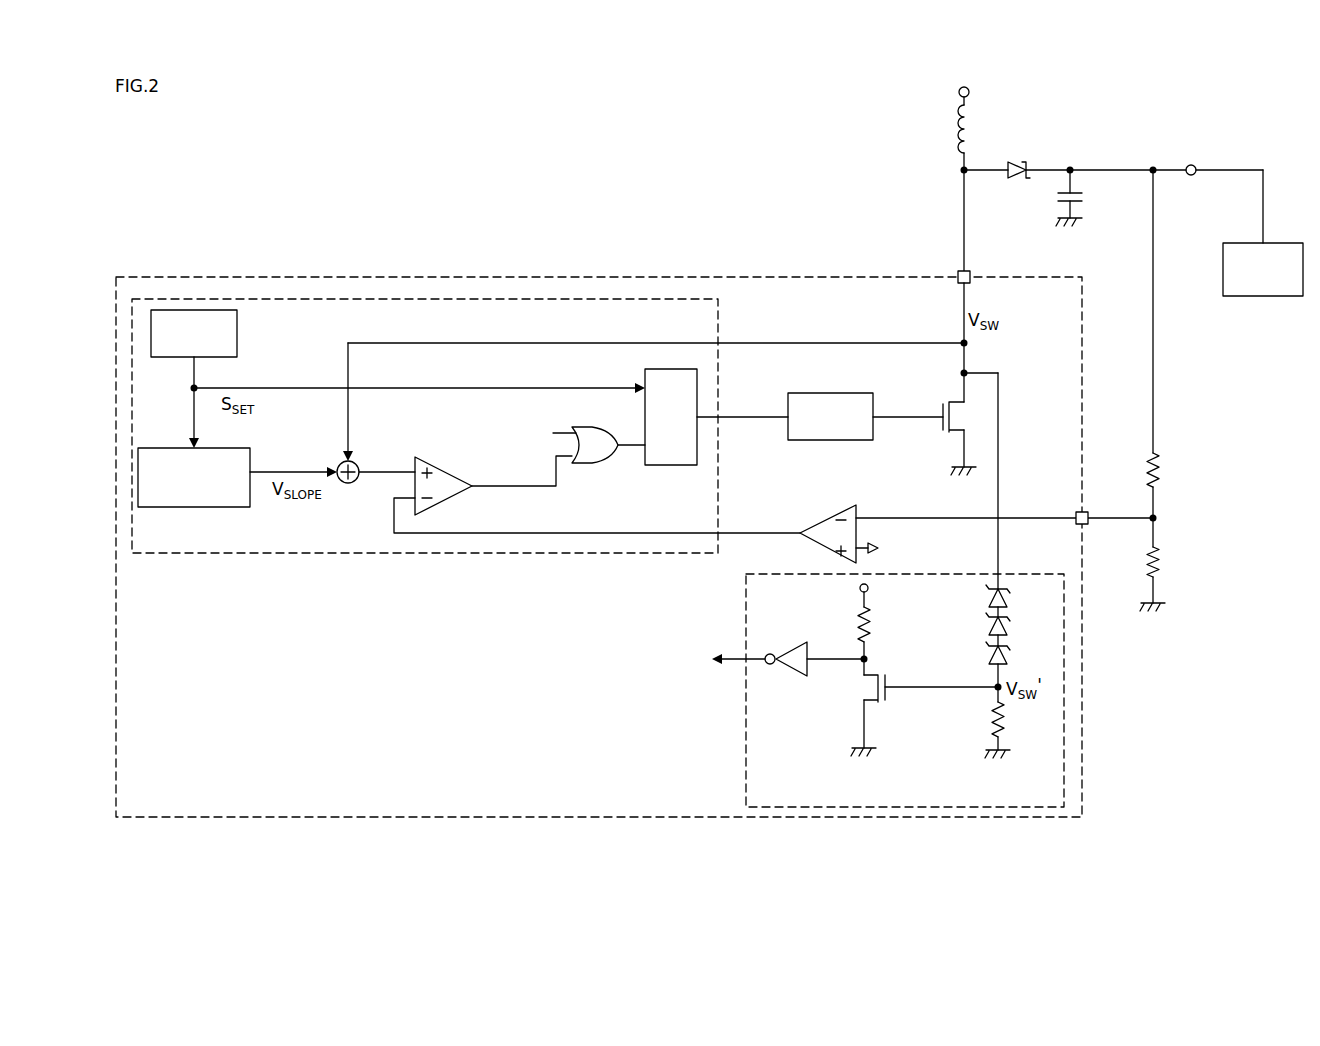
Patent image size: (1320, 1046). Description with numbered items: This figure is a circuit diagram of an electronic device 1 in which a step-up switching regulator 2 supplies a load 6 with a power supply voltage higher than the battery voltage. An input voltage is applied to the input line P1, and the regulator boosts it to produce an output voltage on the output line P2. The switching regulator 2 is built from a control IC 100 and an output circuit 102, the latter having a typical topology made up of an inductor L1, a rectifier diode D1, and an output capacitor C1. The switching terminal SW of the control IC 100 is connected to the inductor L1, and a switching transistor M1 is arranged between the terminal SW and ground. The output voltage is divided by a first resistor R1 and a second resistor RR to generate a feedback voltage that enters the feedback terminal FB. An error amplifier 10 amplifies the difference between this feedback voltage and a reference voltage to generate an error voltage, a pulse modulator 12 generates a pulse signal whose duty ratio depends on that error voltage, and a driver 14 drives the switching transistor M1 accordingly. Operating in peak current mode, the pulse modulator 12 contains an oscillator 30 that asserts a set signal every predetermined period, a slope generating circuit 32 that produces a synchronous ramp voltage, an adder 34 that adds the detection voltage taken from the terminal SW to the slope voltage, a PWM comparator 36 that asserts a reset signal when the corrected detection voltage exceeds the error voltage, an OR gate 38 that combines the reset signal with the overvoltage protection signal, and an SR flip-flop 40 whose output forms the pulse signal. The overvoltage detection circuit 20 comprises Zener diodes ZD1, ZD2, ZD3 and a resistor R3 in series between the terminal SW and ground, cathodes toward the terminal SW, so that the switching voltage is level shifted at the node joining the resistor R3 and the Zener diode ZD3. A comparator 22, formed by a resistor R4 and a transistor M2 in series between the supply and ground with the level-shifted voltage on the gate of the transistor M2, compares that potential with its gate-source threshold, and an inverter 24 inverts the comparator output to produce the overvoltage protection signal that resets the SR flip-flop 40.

The electronic device 1 is at (702, 851).
The switching regulator 2 is at (1106, 120).
The load 6 is at (1270, 296).
The error amplifier 10 is at (826, 508).
The pulse modulator 12 is at (425, 554).
The driver 14 is at (846, 393).
The overvoltage detection circuit 20 is at (746, 758).
The comparator 22 is at (916, 737).
The inverter 24 is at (786, 680).
The oscillator 30 is at (237, 326).
The slope generating circuit 32 is at (207, 507).
The adder 34 is at (345, 483).
The pulse width modulation comparator 36 is at (440, 457).
The OR gate 38 is at (590, 464).
The SR flip-flop 40 is at (672, 465).
The control IC 100 is at (1085, 778).
The output circuit 102 is at (1103, 225).
The input line P1 is at (972, 90).
The output line P2 is at (1191, 176).
The inductor L1 is at (956, 134).
The rectifier diode D1 is at (1020, 150).
The output capacitor C1 is at (1087, 199).
The switching terminal SW is at (957, 273).
The feedback terminal FB is at (1086, 528).
The switching transistor M1 is at (941, 434).
The transistor M2 is at (835, 757).
The first resistor R1 is at (1158, 476).
The feedback resistor RR is at (1158, 566).
The resistor R3 is at (988, 716).
The resistor R4 is at (856, 622).
The Zener diode ZD1 is at (986, 599).
The Zener diode ZD2 is at (986, 628).
The Zener diode ZD3 is at (986, 658).